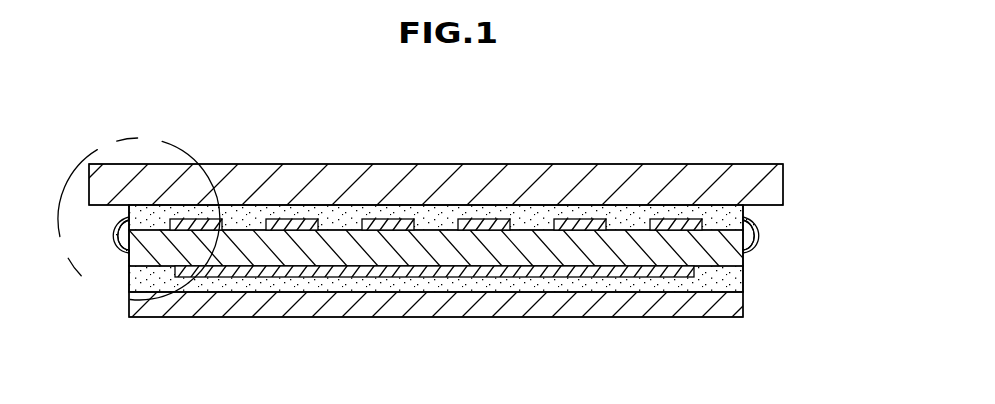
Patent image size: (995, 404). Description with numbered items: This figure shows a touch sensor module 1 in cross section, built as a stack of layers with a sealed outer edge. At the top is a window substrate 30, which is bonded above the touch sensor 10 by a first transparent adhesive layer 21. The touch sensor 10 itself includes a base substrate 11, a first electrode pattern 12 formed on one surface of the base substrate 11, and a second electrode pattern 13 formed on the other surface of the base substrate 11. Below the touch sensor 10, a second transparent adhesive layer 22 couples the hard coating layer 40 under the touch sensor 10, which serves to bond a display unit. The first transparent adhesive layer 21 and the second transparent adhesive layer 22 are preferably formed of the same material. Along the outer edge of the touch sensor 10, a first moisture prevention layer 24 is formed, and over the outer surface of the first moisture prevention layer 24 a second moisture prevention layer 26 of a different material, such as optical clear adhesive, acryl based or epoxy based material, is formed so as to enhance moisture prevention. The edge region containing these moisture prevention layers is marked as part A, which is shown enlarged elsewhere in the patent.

The touch sensor module 1 is at (775, 147).
The touch sensor 10 is at (827, 222).
The base substrate 11 is at (722, 247).
The first electrode pattern 12 is at (702, 211).
The second electrode pattern 13 is at (702, 269).
The first transparent adhesive layer 21 is at (440, 218).
The second transparent adhesive layer 22 is at (435, 283).
The first moisture prevention layer 24 is at (119, 249).
The second moisture prevention layer 26 is at (115, 225).
The window substrate 30 is at (767, 183).
The hard coating layer 40 is at (723, 300).
The part A is at (73, 172).